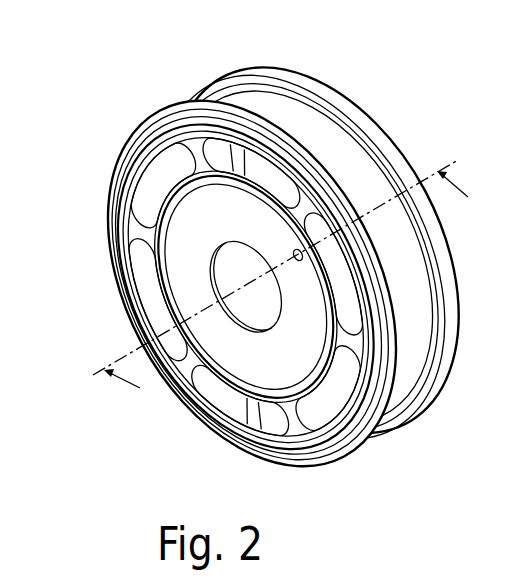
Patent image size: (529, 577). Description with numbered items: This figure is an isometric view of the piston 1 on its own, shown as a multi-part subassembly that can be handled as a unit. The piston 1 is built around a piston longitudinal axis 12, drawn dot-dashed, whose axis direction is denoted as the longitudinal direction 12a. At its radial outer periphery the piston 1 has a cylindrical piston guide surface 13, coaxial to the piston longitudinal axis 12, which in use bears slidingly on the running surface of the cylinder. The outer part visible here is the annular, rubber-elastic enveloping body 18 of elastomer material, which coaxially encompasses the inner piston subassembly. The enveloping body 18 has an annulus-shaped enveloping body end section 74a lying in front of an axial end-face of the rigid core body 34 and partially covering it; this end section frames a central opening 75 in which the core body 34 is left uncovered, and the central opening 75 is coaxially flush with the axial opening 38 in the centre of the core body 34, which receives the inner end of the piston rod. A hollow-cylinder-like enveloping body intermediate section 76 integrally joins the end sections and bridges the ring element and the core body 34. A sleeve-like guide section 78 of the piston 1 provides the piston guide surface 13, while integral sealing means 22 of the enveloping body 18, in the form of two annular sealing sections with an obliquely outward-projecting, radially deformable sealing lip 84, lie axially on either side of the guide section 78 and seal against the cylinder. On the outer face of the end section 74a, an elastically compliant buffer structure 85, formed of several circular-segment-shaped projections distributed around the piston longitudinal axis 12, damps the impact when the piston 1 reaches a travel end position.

The piston 1 is at (376, 98).
The piston longitudinal axis 12 is at (116, 357).
The longitudinal direction 12a is at (275, 291).
The piston guide surface 13 is at (413, 413).
The enveloping body 18 is at (329, 80).
The sealing means 22 is at (352, 462).
The core body 34 is at (243, 368).
The axial opening 38 is at (243, 310).
The enveloping body end section 74a is at (300, 432).
The central opening 75 is at (302, 251).
The enveloping body intermediate section 76 is at (417, 320).
The guide section 78 is at (226, 89).
The sealing lip 84 is at (465, 378).
The buffer structure 85 is at (151, 138).